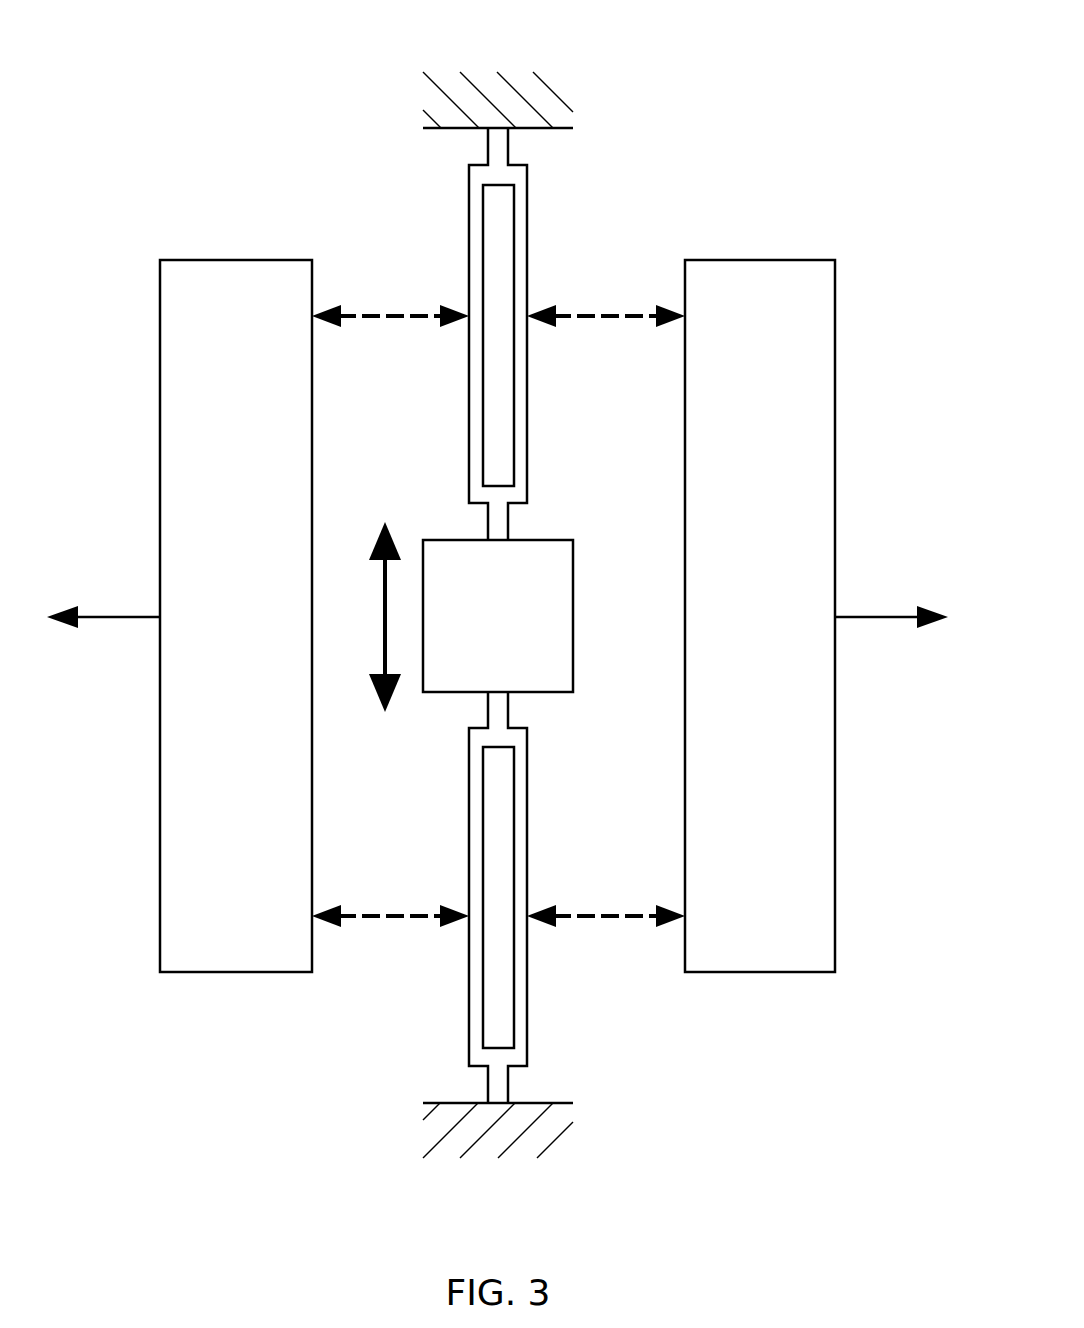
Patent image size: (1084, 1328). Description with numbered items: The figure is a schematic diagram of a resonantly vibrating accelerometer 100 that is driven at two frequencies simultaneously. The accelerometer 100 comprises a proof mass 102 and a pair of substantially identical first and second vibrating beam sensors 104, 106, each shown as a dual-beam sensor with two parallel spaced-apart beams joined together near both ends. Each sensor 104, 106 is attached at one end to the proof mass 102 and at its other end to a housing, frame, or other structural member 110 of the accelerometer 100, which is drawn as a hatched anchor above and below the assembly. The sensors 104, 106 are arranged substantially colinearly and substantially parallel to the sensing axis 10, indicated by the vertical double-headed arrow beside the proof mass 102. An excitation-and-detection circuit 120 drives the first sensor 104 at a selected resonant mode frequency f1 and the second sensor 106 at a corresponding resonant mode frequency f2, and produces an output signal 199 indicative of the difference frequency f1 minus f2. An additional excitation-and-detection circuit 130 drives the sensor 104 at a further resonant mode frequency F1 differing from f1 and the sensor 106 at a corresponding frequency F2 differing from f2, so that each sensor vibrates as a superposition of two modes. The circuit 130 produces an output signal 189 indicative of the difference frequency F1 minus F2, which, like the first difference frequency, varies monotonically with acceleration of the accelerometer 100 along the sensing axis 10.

The resonantly vibrating accelerometer 100 is at (752, 130).
The structural member 110 is at (515, 110).
The first vibrating beam sensor 104 is at (558, 415).
The second vibrating beam sensor 106 is at (555, 824).
The proof mass 102 is at (478, 595).
The excitation-and-detection circuit 120 is at (216, 557).
The additional excitation-and-detection circuit 130 is at (739, 557).
The output signal 199 is at (115, 612).
The output signal 189 is at (893, 610).
The sensing axis 10 is at (385, 613).